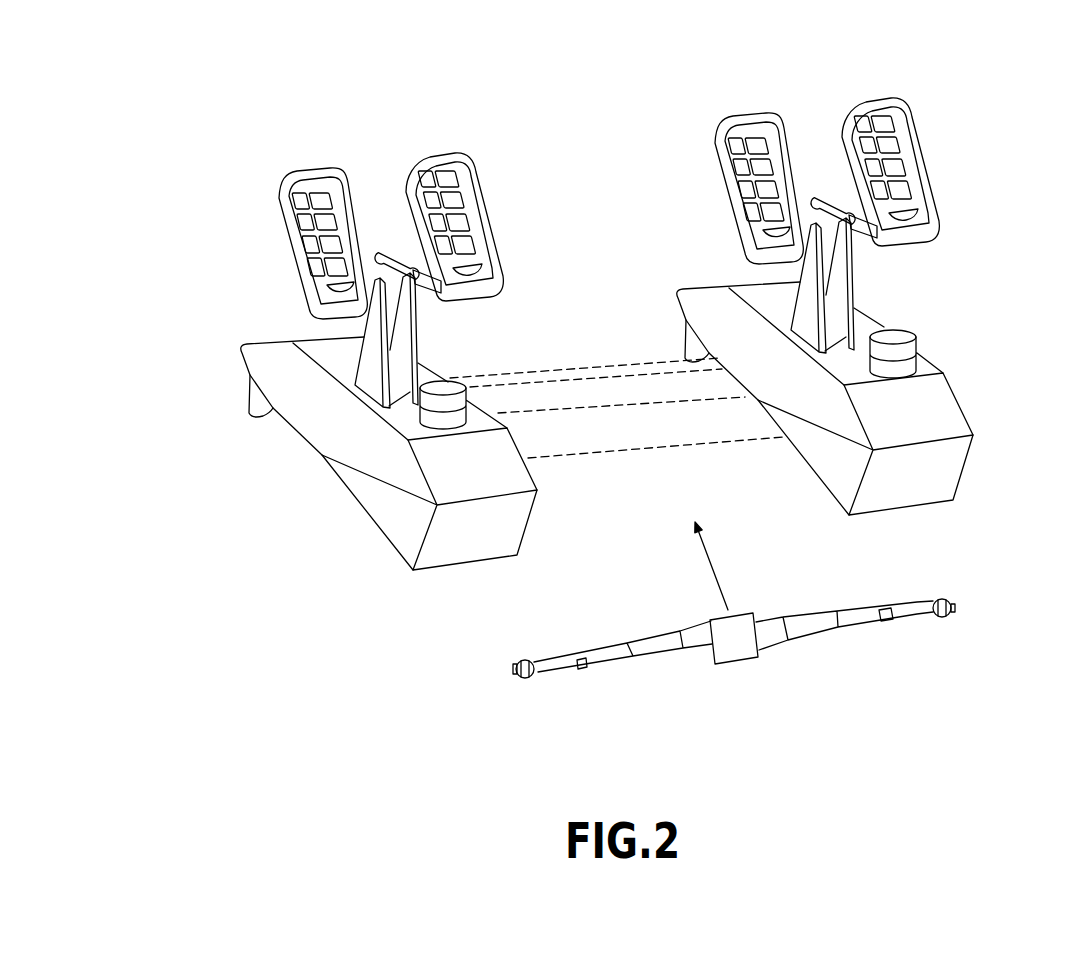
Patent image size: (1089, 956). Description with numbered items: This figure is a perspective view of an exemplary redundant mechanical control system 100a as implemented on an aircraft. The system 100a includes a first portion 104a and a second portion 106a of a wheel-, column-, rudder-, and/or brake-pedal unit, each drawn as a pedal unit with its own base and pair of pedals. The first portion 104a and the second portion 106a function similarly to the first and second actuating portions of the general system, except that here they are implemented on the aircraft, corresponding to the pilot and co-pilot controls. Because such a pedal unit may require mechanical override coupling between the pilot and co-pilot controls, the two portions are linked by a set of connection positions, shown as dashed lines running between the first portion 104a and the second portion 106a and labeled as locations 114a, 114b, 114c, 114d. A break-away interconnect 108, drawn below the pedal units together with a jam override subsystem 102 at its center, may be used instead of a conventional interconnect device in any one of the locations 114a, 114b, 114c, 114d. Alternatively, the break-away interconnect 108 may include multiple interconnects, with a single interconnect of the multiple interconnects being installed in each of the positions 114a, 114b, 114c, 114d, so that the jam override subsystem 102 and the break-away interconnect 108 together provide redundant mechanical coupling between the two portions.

The redundant mechanical control system 100a is at (433, 60).
The first portion 104a is at (248, 159).
The second portion 106a is at (924, 76).
The location 114a is at (537, 374).
The location 114b is at (640, 374).
The location 114c is at (622, 405).
The location 114d is at (639, 447).
The jam override subsystem 102 is at (735, 666).
The break-away interconnect 108 is at (648, 664).